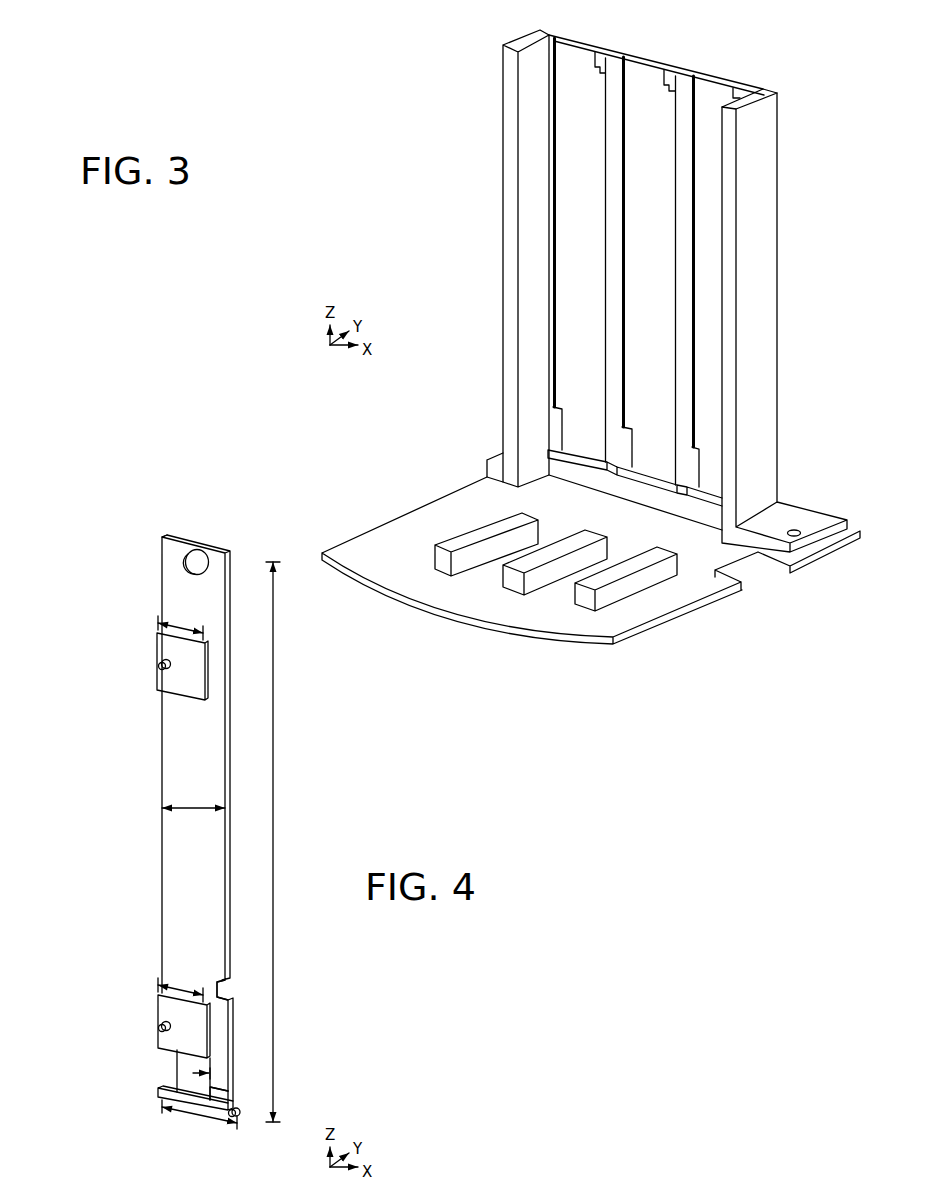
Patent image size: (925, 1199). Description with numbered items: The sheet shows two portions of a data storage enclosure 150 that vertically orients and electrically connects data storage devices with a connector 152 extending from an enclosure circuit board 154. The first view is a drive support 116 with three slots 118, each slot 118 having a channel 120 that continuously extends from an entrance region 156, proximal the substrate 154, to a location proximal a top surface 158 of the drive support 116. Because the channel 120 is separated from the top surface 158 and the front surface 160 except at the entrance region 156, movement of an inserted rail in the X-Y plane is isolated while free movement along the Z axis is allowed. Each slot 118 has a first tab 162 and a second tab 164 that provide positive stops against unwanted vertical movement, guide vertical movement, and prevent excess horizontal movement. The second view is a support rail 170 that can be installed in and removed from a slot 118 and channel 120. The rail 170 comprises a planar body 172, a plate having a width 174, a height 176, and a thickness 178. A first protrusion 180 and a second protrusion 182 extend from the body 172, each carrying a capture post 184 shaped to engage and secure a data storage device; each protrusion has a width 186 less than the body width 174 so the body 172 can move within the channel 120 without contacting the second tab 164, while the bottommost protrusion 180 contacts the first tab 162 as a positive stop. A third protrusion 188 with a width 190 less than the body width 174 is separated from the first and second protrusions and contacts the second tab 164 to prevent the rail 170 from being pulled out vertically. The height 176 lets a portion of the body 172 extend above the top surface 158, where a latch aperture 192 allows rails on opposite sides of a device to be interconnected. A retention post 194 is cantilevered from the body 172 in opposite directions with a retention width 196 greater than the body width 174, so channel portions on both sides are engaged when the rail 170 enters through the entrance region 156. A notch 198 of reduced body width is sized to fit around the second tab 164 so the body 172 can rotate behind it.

In FIG. 3, the drive support 116 is at (776, 207).
In FIG. 3, the slot 118 is at (648, 78).
In FIG. 3, the channel 120 is at (605, 44).
In FIG. 3, the data storage enclosure 150 is at (390, 85).
In FIG. 3, the connector 152 is at (602, 536).
In FIG. 3, the enclosure circuit board 154 is at (479, 511).
In FIG. 3, the entrance region 156 is at (578, 447).
In FIG. 3, the top surface 158 is at (762, 92).
In FIG. 3, the front surface 160 is at (551, 182).
In FIG. 3, the first tab 162 is at (561, 406).
In FIG. 3, the second tab 164 is at (596, 75).
In FIG. 4, the support rail 170 is at (102, 518).
In FIG. 4, the planar body 172 is at (158, 892).
In FIG. 4, the width 174 is at (193, 823).
In FIG. 4, the height 176 is at (290, 842).
In FIG. 4, the thickness 178 is at (145, 552).
In FIG. 4, the first protrusion 180 is at (157, 1047).
In FIG. 4, the second protrusion 182 is at (156, 689).
In FIG. 4, the capture post 184 is at (158, 665).
In FIG. 4, the width 186 is at (182, 803).
In FIG. 4, the third protrusion 188 is at (235, 1100).
In FIG. 4, the width 190 is at (231, 1084).
In FIG. 4, the latch aperture 192 is at (199, 552).
In FIG. 4, the retention post 194 is at (158, 1092).
In FIG. 4, the retention width 196 is at (199, 1123).
In FIG. 4, the notch 198 is at (231, 989).